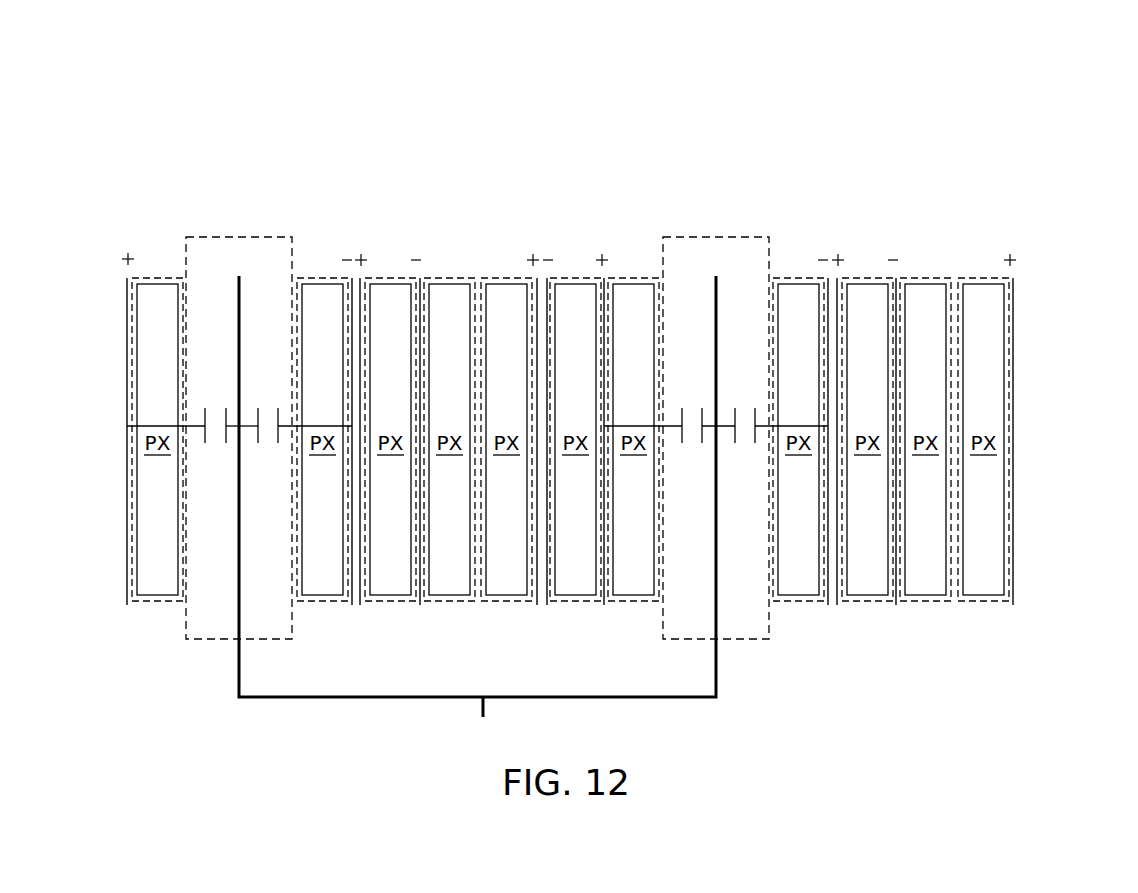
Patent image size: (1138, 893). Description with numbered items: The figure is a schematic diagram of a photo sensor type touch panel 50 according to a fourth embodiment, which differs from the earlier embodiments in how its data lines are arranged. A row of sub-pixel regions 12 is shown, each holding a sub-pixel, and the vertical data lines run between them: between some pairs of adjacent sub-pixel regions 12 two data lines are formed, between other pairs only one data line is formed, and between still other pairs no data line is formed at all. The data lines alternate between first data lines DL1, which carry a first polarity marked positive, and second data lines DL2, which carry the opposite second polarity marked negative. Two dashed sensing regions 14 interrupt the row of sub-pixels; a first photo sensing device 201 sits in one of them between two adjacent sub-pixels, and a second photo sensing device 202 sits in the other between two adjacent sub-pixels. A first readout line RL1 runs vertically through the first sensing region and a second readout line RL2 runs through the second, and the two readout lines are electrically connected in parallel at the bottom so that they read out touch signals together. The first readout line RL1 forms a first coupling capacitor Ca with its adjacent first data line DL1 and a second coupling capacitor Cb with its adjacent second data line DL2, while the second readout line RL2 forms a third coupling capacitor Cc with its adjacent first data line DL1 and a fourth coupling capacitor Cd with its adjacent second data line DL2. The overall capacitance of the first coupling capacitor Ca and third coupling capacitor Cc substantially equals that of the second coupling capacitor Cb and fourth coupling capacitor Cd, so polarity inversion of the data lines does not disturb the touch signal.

The photo sensor type touch panel 50 is at (1078, 102).
The sub-pixel region 12 is at (570, 464).
The sensing region 14 is at (200, 640).
The first photo sensing device 201 is at (239, 329).
The second photo sensing device 202 is at (716, 329).
The first data line DL1 is at (127, 278).
The second data line DL2 is at (352, 278).
The first readout line RL1 is at (239, 698).
The second readout line RL2 is at (716, 698).
The first coupling capacitor Ca is at (216, 440).
The second coupling capacitor Cb is at (268, 440).
The third coupling capacitor Cc is at (692, 440).
The fourth coupling capacitor Cd is at (745, 440).